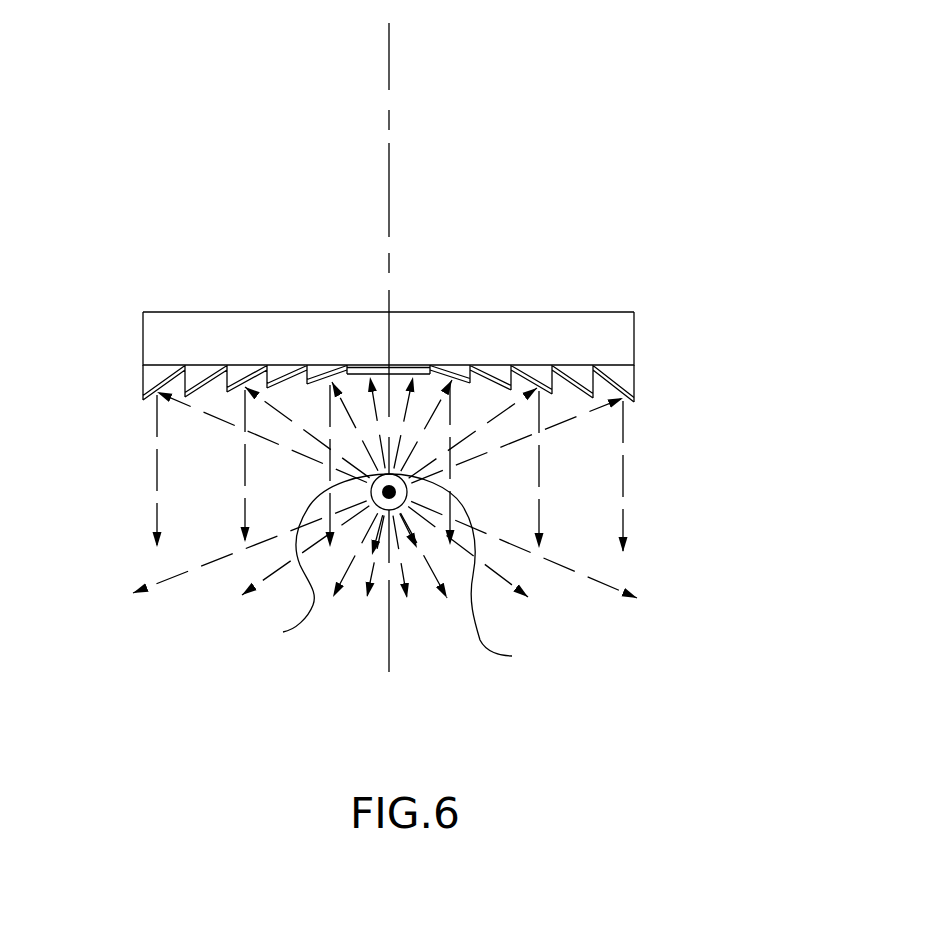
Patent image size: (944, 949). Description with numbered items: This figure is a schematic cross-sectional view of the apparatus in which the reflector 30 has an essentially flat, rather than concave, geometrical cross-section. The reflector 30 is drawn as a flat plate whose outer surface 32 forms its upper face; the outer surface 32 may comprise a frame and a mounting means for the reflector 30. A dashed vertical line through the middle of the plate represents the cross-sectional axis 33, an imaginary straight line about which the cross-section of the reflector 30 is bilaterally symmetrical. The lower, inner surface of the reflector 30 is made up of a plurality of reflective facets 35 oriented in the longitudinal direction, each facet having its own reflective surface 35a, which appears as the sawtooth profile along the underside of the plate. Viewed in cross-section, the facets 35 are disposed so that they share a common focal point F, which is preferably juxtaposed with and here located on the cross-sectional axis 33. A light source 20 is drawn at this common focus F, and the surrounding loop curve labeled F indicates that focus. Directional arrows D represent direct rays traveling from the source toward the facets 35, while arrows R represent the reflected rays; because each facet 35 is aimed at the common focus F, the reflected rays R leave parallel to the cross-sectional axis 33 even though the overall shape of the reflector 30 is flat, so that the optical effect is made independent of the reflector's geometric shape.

The light source 20 is at (310, 617).
The reflector 30 is at (410, 335).
The outer surface 32 is at (553, 310).
The cross-sectional axis 33 is at (389, 82).
The reflective facets 35 is at (627, 377).
The reflective surface 35a is at (628, 402).
The direct rays D is at (207, 417).
The reflected rays R is at (157, 520).
The common focal point F is at (411, 573).